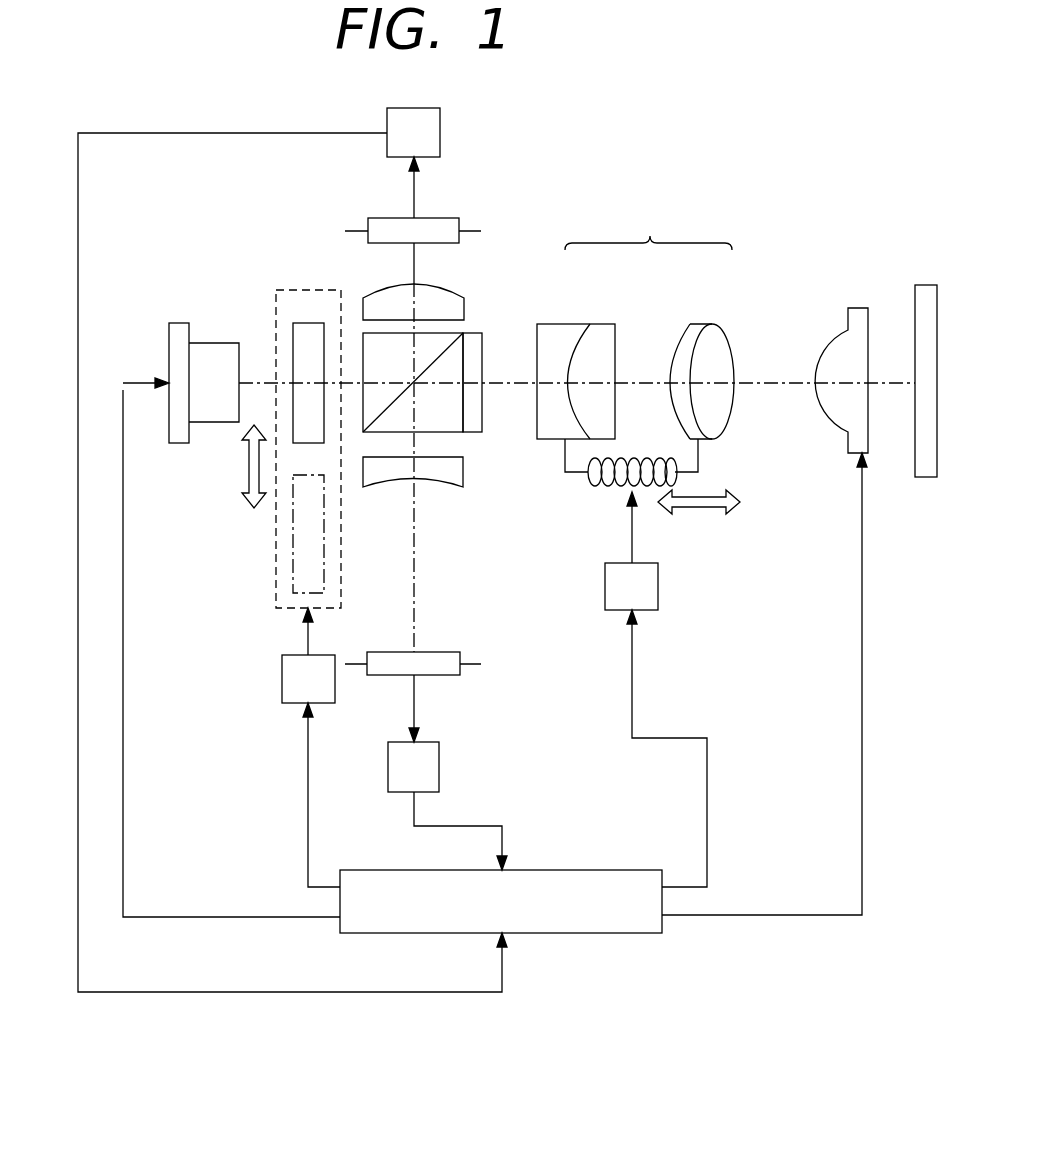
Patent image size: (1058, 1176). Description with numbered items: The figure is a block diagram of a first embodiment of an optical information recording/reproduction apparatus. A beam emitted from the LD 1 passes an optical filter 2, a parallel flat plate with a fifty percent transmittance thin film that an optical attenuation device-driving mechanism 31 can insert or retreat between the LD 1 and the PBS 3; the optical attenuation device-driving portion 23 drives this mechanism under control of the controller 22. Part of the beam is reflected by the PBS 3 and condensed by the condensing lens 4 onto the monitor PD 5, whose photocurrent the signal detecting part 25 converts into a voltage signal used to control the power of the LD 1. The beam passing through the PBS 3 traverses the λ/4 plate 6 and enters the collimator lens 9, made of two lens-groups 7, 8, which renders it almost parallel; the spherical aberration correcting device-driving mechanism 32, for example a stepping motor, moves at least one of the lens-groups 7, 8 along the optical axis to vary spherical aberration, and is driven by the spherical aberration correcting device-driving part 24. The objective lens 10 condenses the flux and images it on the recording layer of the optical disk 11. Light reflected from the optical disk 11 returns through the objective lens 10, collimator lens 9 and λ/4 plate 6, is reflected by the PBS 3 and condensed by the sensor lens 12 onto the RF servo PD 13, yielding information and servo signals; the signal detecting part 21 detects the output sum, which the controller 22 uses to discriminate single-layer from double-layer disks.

The LD (semiconductor laser) 1 is at (220, 342).
The optical filter 2 is at (313, 323).
The PBS (polarization beam splitter) 3 is at (445, 338).
The condensing lens 4 is at (433, 284).
The monitor PD (photodiode) 5 is at (440, 218).
The λ/4 plate 6 is at (482, 407).
The lens-group 7 is at (580, 324).
The lens-group 8 is at (712, 324).
The collimator lens 9 is at (648, 228).
The objective lens 10 is at (858, 308).
The optical disk 11 is at (930, 285).
The sensor lens 12 is at (463, 470).
The RF servo PD 13 is at (440, 652).
The signal detecting part 21 is at (439, 757).
The controller 22 is at (600, 870).
The optical attenuation device-driving portion 23 is at (282, 686).
The spherical aberration correcting device-driving part 24 is at (658, 583).
The signal detecting part 25 is at (440, 130).
The optical attenuation device-driving mechanism 31 is at (275, 582).
The spherical aberration correcting device-driving mechanism 32 is at (600, 488).